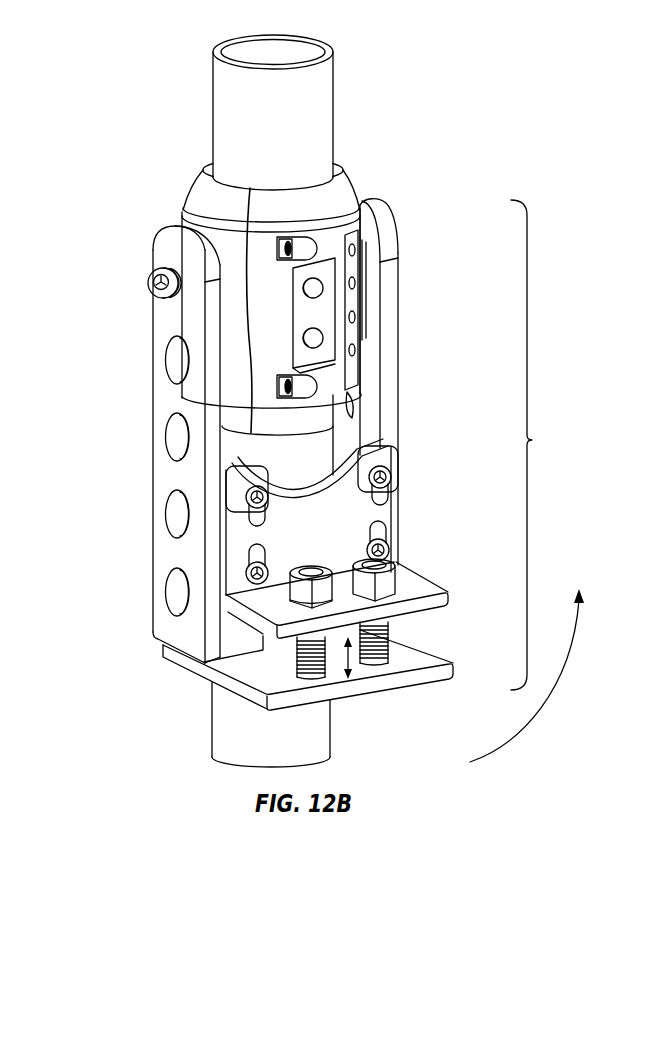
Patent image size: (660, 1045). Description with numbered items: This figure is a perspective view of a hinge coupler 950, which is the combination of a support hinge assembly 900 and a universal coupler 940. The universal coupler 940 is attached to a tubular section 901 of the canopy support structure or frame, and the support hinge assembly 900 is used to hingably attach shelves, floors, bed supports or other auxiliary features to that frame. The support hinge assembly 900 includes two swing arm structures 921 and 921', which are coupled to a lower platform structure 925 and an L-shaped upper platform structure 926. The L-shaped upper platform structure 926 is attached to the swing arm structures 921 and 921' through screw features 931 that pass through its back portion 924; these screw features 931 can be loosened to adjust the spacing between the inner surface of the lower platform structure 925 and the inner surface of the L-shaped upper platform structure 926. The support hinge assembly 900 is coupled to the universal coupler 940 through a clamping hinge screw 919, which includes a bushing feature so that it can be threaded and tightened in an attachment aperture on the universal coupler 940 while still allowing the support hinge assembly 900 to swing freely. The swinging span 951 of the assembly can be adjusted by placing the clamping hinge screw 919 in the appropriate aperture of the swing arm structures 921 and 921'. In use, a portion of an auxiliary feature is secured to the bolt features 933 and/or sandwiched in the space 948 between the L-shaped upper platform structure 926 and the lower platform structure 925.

The hinge coupler 950 is at (136, 73).
The tubular section 901 is at (322, 116).
The universal coupler 940 is at (202, 197).
The clamping hinge screw 919 is at (150, 282).
The swing arm structure 921 is at (158, 444).
The swing arm structure 921' is at (415, 382).
The screw feature 931 is at (245, 492).
The back portion 924 is at (332, 546).
The bolt feature 933 is at (384, 586).
The L-shaped upper platform structure 926 is at (437, 603).
The lower platform structure 925 is at (437, 673).
The space 948 is at (362, 666).
The support hinge assembly 900 is at (542, 445).
The swinging span 951 is at (570, 683).